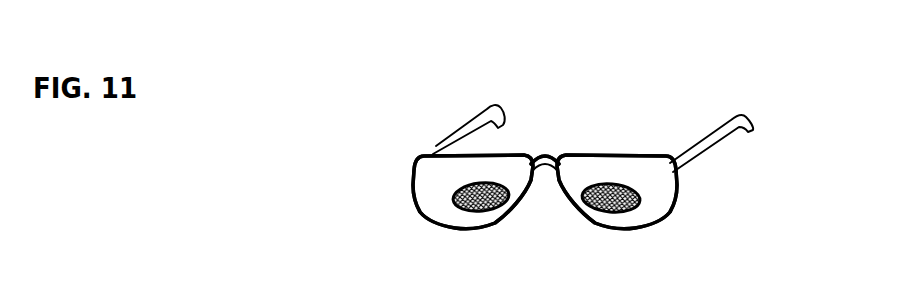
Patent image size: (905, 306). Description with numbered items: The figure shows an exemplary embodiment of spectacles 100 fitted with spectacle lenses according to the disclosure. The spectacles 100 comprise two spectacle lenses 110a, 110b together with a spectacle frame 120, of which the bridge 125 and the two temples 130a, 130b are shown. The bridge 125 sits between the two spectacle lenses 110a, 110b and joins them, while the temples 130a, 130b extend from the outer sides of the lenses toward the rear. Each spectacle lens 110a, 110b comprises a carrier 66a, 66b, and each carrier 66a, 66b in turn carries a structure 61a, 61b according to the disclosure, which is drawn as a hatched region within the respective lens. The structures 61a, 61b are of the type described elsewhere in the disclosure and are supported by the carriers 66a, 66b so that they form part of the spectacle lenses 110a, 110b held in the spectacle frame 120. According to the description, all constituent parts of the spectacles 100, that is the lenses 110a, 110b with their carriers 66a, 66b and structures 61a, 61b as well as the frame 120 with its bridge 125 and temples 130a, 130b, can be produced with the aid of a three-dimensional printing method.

The spectacles 100 is at (680, 95).
The spectacle lens 110a is at (432, 190).
The spectacle lens 110b is at (665, 190).
The carrier 66a is at (505, 157).
The carrier 66b is at (600, 155).
The temple 130a is at (448, 136).
The temple 130b is at (702, 143).
The spectacle frame 120 is at (547, 151).
The bridge 125 is at (541, 163).
The structure 61a is at (455, 208).
The structure 61b is at (636, 212).